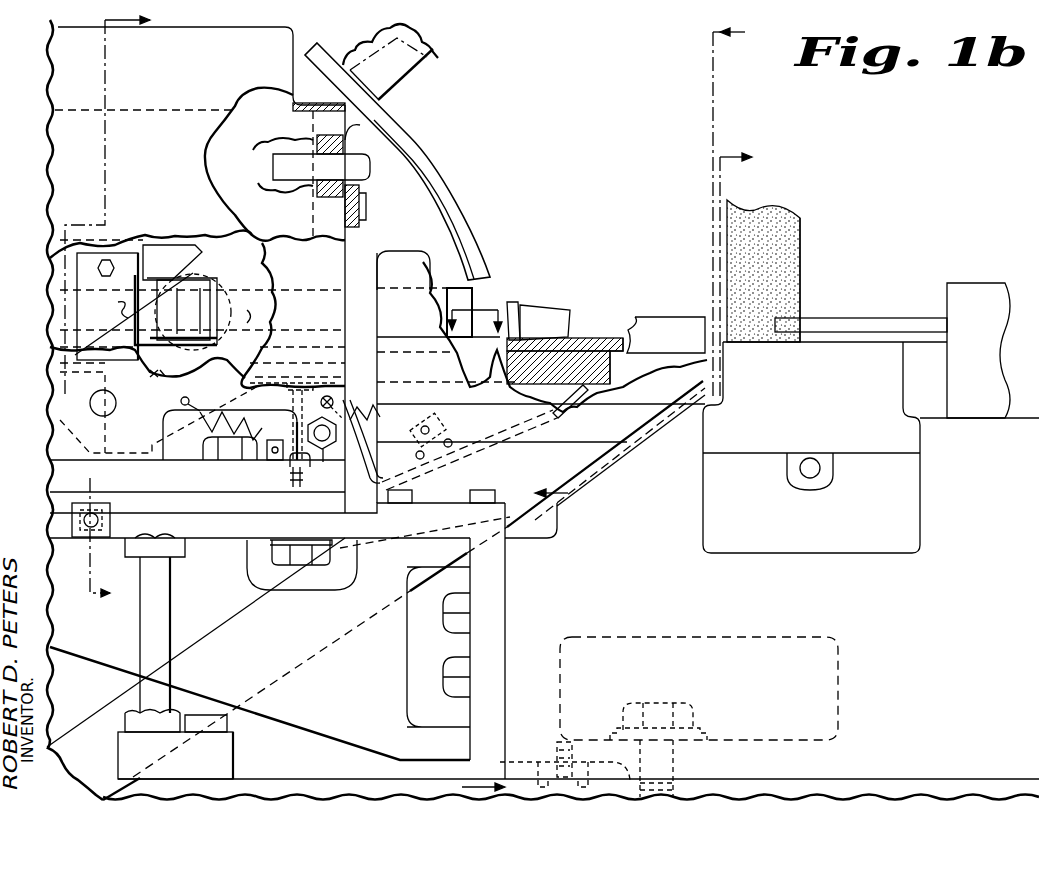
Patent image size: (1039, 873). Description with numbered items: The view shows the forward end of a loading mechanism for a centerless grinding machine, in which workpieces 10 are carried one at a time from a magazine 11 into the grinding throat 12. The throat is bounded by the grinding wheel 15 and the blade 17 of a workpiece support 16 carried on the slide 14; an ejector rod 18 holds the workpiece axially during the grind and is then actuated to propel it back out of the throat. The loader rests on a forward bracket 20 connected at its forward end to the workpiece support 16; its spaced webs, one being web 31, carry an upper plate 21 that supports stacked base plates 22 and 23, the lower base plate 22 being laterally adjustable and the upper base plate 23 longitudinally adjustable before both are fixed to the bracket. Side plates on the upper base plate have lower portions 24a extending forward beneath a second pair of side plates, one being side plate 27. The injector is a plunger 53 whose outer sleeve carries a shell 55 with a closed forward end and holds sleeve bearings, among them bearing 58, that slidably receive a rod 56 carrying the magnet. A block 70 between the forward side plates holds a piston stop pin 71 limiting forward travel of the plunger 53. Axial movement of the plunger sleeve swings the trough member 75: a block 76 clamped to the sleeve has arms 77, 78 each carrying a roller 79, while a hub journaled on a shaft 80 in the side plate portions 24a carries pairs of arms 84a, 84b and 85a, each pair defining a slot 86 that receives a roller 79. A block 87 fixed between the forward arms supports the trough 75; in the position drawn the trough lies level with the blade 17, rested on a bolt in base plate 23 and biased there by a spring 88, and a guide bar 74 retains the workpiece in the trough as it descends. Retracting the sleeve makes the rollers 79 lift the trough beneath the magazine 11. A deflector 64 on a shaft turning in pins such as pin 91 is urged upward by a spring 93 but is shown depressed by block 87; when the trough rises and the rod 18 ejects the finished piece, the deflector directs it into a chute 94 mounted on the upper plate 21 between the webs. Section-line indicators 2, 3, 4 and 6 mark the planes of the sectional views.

The section line 2- 2 is at (605, 473).
The section line 3- 3 is at (640, 262).
The section line 4- 4 is at (107, 316).
The section line 6- 6 is at (473, 312).
The workpiece 10 is at (435, 62).
The magazine 11 is at (430, 46).
The grinding throat 12 is at (802, 292).
The slide 14 is at (912, 778).
The grinding wheel 15 is at (803, 218).
The workpiece support 16 is at (947, 625).
The blade 17 is at (827, 408).
The ejector rod 18 is at (843, 316).
The forward bracket 20 is at (285, 722).
The upper plate 21 is at (238, 535).
The base plate 22 is at (198, 509).
The upper base plate 23 is at (198, 481).
The lower portion of side plate 24a is at (235, 362).
The side plate 27 is at (255, 90).
The web 31 is at (348, 694).
The plunger 53 is at (357, 278).
The casing 55 is at (372, 315).
The rod 56 is at (273, 273).
The sleeve bearing 58 is at (210, 280).
The deflector 64 is at (497, 430).
The block 70 is at (310, 186).
The piston stop pin 71 is at (290, 152).
The guide bar 74 is at (466, 212).
The trough member 75 is at (640, 318).
The block 76 is at (113, 270).
The arm 77 is at (172, 262).
The arm 78 is at (160, 340).
The roller 79 is at (193, 273).
The shaft 80 is at (110, 416).
The arm 84a is at (80, 352).
The arm 84b is at (445, 350).
The arm 85a is at (168, 245).
The slot 86 is at (150, 377).
The block 87 is at (290, 402).
The spring 88 is at (230, 435).
The pin 91 is at (316, 441).
The spring 93 is at (372, 412).
The workpiece receiving chute 94 is at (352, 637).